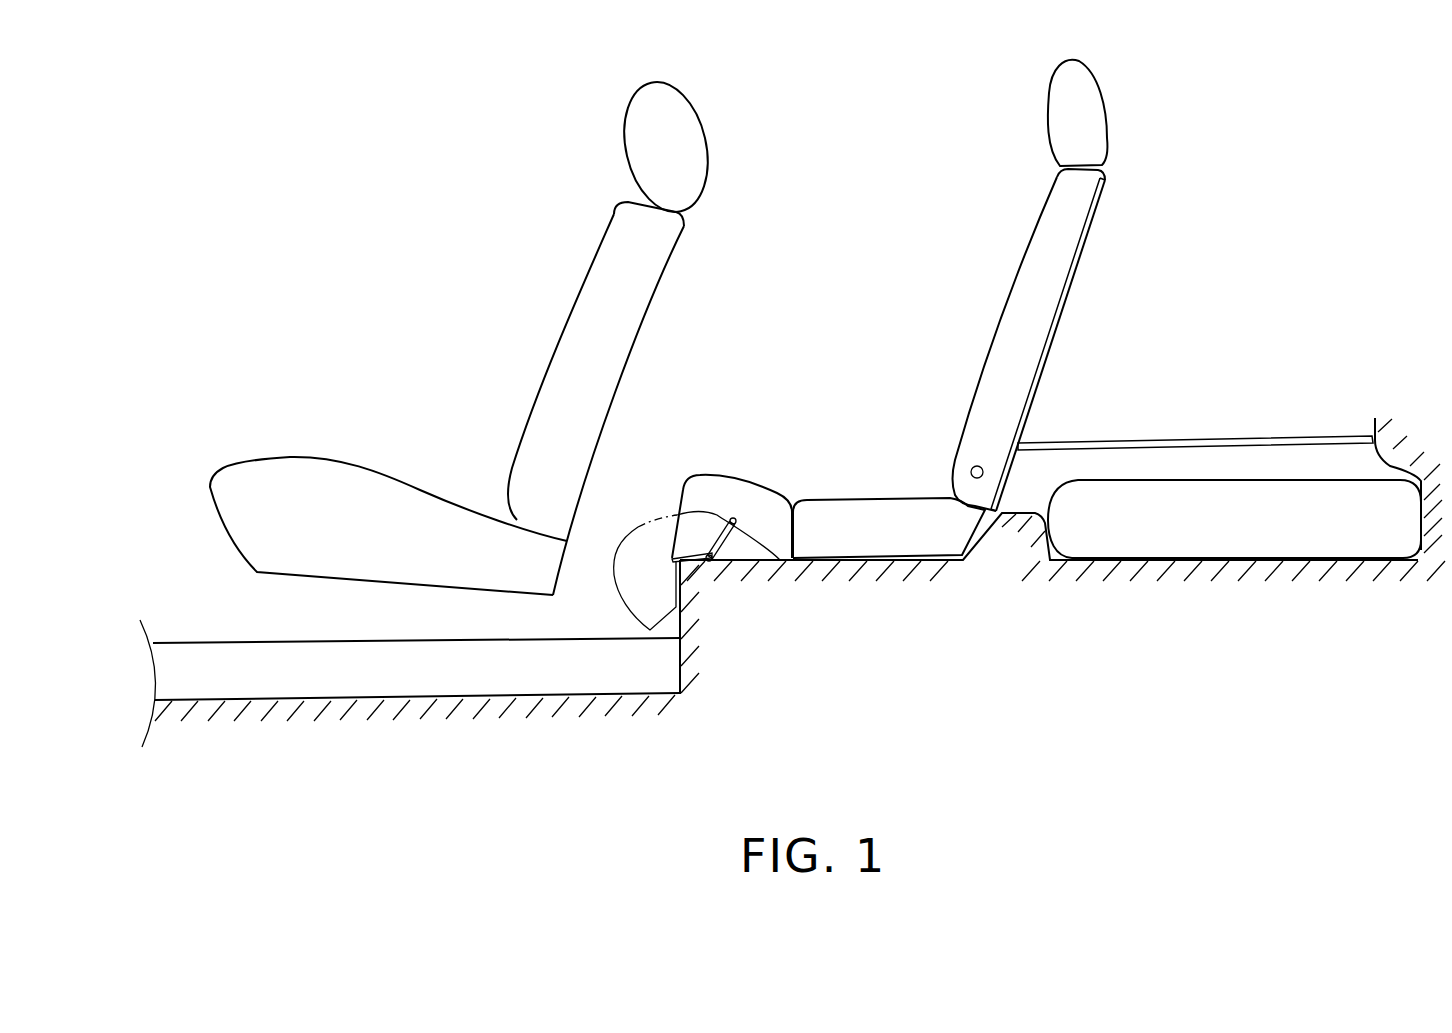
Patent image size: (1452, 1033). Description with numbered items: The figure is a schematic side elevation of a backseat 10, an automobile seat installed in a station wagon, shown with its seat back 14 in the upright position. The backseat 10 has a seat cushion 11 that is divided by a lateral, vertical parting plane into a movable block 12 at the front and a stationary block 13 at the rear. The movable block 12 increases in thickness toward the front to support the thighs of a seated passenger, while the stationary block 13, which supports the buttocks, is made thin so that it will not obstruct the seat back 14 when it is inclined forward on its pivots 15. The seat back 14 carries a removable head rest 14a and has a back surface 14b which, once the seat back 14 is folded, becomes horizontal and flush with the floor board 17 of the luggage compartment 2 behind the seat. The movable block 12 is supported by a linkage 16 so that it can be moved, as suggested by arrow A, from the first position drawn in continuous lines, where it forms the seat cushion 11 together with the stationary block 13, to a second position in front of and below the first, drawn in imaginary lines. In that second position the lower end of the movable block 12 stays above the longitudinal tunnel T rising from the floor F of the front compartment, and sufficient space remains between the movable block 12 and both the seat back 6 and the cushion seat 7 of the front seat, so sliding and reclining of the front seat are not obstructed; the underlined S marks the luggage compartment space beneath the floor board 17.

The luggage compartment 2 is at (1263, 307).
The seat back of the front seat 6 is at (572, 346).
The cushion seat of the front seat 7 is at (307, 474).
The backseat 10 is at (838, 258).
The seat cushion 11 is at (752, 408).
The movable block 12 is at (728, 487).
The stationary block 13 is at (853, 510).
The seat back 14 is at (1005, 317).
The head rest 14a is at (1085, 106).
The back surface 14b is at (1078, 253).
The pivots 15 is at (971, 470).
The linkage 16 is at (725, 543).
The floor board 17 is at (1255, 440).
The folding direction of front cushion portion A is at (642, 508).
The longitudinal tunnel T is at (242, 642).
The floor F is at (515, 692).
The storage space / spare tire S is at (1221, 534).